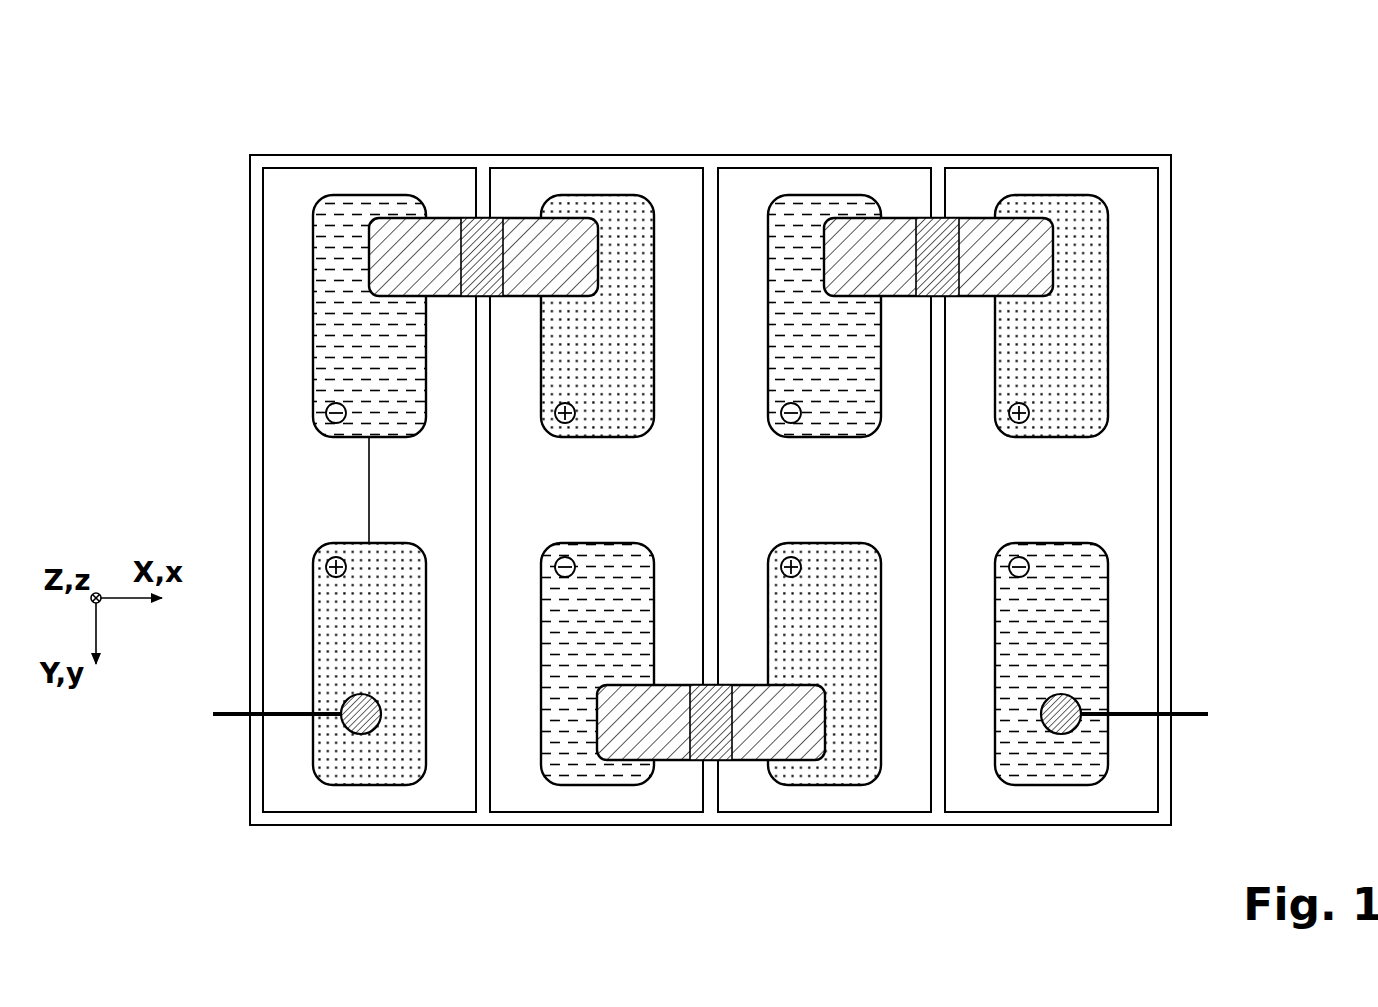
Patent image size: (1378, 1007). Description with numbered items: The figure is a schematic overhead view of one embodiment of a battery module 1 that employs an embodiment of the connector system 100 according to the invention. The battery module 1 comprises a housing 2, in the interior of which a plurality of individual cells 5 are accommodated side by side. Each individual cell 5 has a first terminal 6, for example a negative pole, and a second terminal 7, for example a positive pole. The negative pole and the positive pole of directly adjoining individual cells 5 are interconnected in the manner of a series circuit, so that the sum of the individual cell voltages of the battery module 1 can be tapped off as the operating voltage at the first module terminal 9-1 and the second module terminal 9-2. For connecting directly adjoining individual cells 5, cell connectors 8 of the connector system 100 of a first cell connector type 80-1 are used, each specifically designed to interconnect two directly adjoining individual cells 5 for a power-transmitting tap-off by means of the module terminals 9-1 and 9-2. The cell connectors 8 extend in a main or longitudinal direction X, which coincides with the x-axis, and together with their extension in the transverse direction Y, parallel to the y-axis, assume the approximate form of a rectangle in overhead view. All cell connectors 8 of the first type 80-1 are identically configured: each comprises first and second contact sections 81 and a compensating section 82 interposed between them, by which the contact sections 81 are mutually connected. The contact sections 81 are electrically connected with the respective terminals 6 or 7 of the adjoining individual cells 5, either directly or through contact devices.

The battery module 1 is at (212, 127).
The housing 2 is at (1152, 156).
The individual cell 5 is at (292, 205).
The first terminal 6 is at (350, 222).
The second terminal 7 is at (627, 223).
The cell connector 8 is at (711, 502).
The first cell connector type 80-1 is at (462, 197).
The connector system 100 is at (517, 193).
The contact section 81 is at (597, 760).
The compensating section 82 is at (732, 760).
The first module terminal 9-1 is at (1180, 712).
The second module terminal 9-2 is at (242, 712).